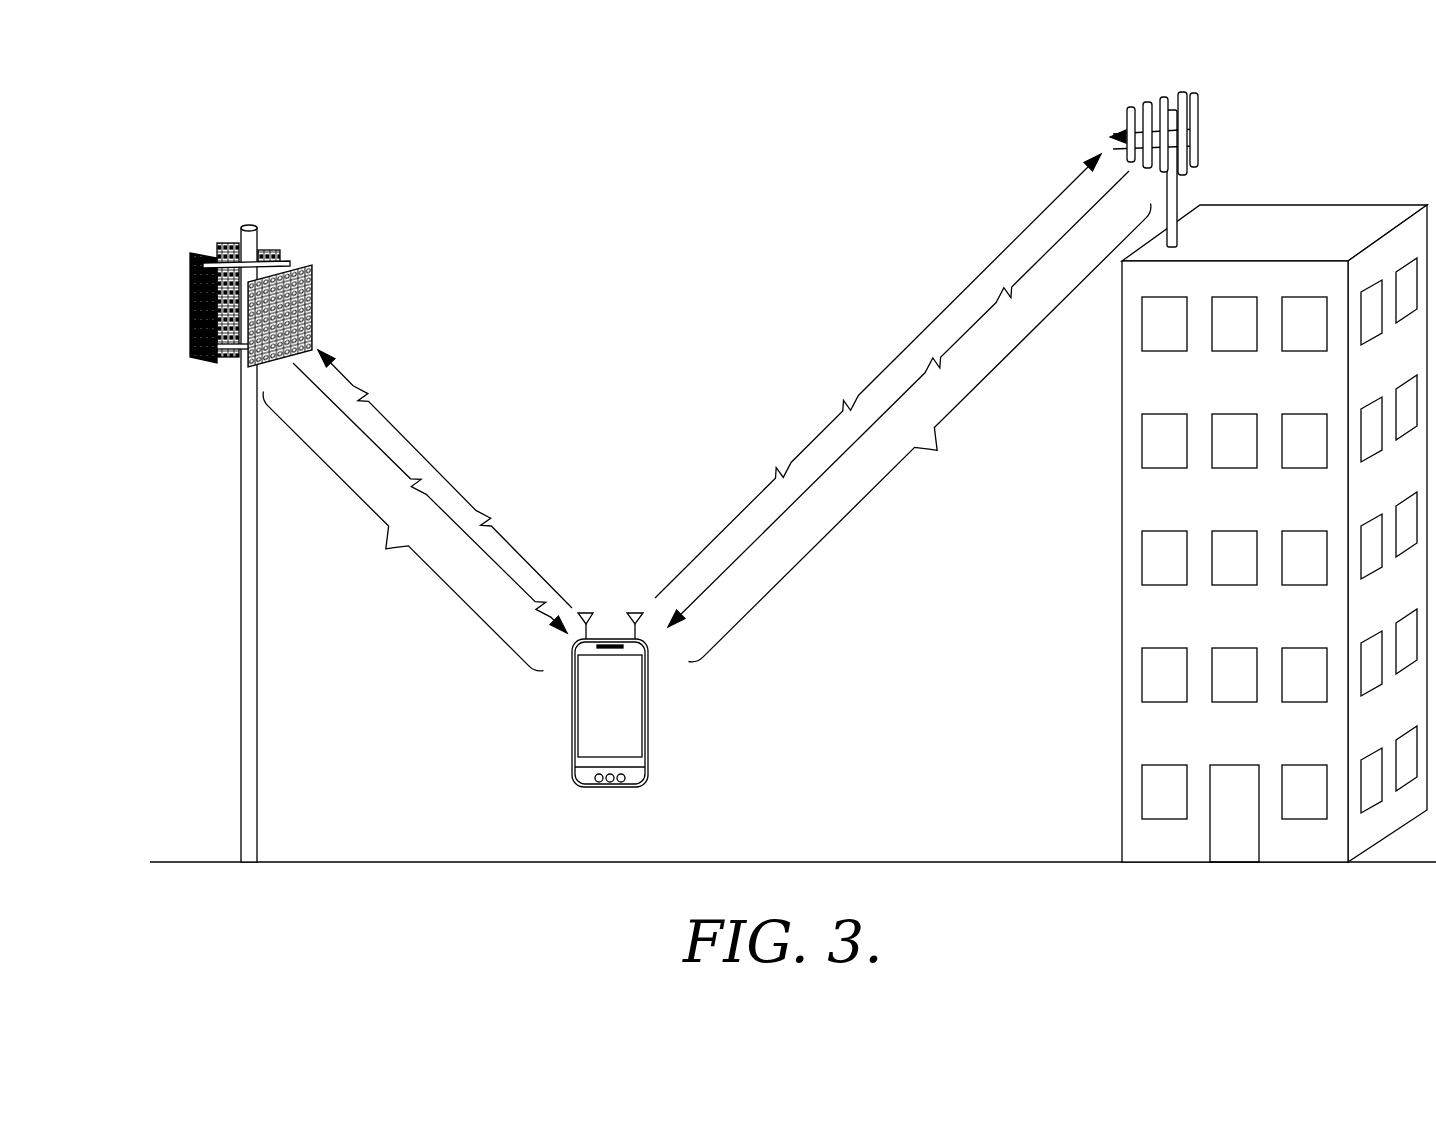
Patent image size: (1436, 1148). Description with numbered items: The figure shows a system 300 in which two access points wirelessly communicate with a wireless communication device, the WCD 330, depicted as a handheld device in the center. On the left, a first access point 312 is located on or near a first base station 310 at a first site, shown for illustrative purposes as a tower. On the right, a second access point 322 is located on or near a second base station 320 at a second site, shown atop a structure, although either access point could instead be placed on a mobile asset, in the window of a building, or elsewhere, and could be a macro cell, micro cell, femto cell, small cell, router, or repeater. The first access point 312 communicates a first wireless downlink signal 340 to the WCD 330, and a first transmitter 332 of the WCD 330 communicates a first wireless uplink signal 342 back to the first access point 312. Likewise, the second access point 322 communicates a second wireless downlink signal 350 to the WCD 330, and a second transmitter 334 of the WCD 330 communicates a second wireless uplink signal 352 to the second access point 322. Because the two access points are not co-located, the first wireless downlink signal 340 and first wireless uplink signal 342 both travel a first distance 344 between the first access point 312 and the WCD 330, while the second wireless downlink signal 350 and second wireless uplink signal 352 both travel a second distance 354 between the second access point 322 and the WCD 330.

The system 300 is at (375, 78).
The first base station 310 is at (175, 518).
The first access point 312 is at (335, 257).
The second base station 320 is at (1262, 178).
The second access point 322 is at (1178, 95).
The WCD 330 is at (572, 717).
The first transmitter 332 is at (585, 612).
The second transmitter 334 is at (634, 611).
The first wireless downlink signal 340 is at (463, 531).
The first wireless uplink signal 342 is at (424, 452).
The first distance 344 is at (386, 549).
The second wireless downlink signal 350 is at (803, 494).
The second wireless uplink signal 352 is at (904, 346).
The second distance 354 is at (937, 450).